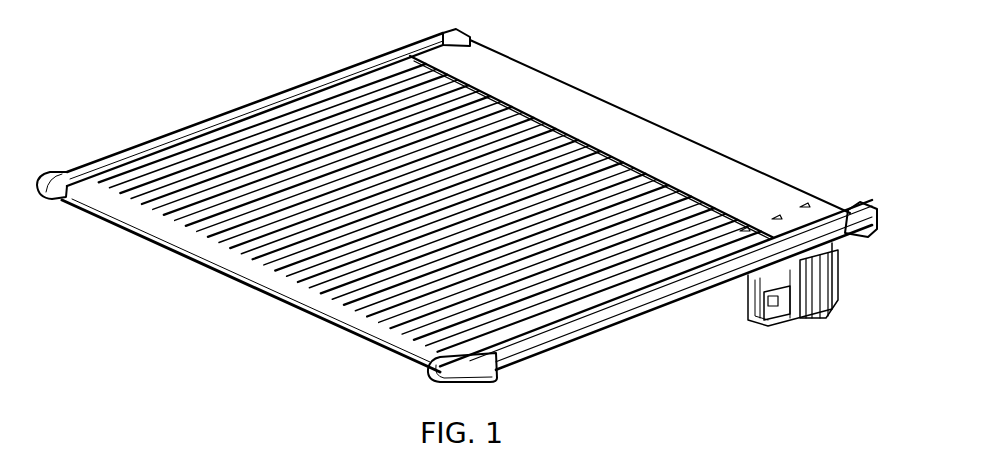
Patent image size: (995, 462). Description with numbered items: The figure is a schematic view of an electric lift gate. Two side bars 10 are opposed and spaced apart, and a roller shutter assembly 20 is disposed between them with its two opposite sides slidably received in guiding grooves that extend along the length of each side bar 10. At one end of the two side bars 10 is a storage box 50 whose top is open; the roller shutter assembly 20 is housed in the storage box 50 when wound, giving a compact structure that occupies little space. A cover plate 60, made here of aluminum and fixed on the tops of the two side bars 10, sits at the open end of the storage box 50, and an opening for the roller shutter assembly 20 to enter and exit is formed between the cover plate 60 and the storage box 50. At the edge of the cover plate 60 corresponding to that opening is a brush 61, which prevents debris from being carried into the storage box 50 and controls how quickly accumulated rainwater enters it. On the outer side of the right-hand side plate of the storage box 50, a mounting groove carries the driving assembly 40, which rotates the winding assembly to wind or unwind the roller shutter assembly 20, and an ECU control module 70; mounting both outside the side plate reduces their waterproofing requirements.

The side bar 10 is at (251, 105).
The roller shutter assembly 20 is at (355, 285).
The driving assembly 40 is at (775, 324).
The storage box 50 is at (745, 297).
The cover plate 60 is at (658, 142).
The brush 61 is at (763, 222).
The ECU control module 70 is at (830, 297).